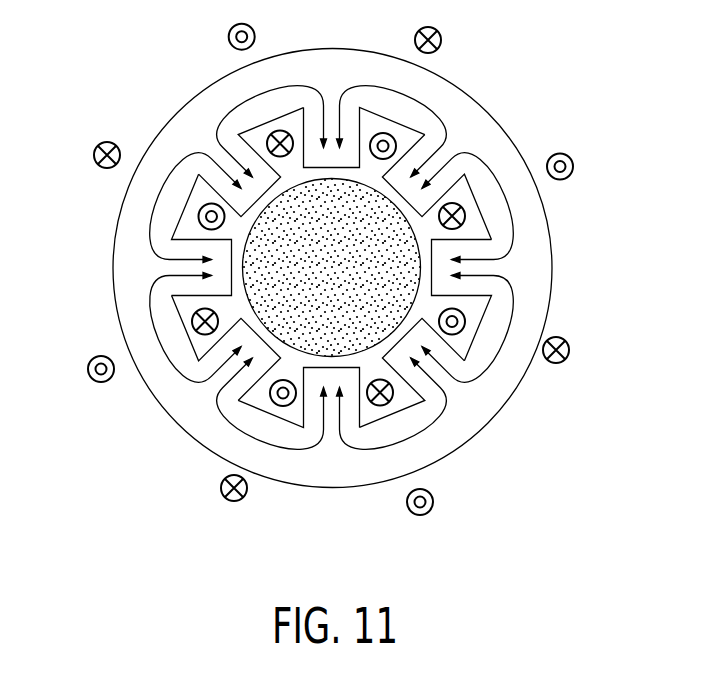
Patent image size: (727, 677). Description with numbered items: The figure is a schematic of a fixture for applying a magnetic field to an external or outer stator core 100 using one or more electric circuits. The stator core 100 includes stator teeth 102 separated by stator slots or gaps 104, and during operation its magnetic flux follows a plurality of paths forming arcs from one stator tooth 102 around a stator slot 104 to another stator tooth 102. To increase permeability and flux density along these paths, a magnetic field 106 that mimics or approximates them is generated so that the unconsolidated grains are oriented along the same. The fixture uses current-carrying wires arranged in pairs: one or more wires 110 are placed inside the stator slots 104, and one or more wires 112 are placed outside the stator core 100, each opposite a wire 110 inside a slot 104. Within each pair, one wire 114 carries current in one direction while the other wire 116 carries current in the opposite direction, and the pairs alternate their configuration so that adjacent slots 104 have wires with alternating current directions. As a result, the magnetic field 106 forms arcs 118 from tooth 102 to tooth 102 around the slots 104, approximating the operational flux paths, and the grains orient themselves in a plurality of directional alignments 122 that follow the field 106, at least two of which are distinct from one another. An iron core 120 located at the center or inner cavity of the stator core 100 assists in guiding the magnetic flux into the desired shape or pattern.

The stator core 100 is at (160, 133).
The stator teeth 102 is at (193, 328).
The stator slots 104 is at (470, 183).
The magnetic field 106 is at (512, 220).
The wires inside the stator slots 110 is at (395, 398).
The wires outside the stator core 112 is at (89, 372).
The wire carrying current in one direction 114 is at (575, 167).
The wire carrying current in the opposite direction 116 is at (441, 38).
The arcs 118 is at (285, 90).
The iron core 120 is at (257, 247).
The directional alignments 122 is at (246, 101).